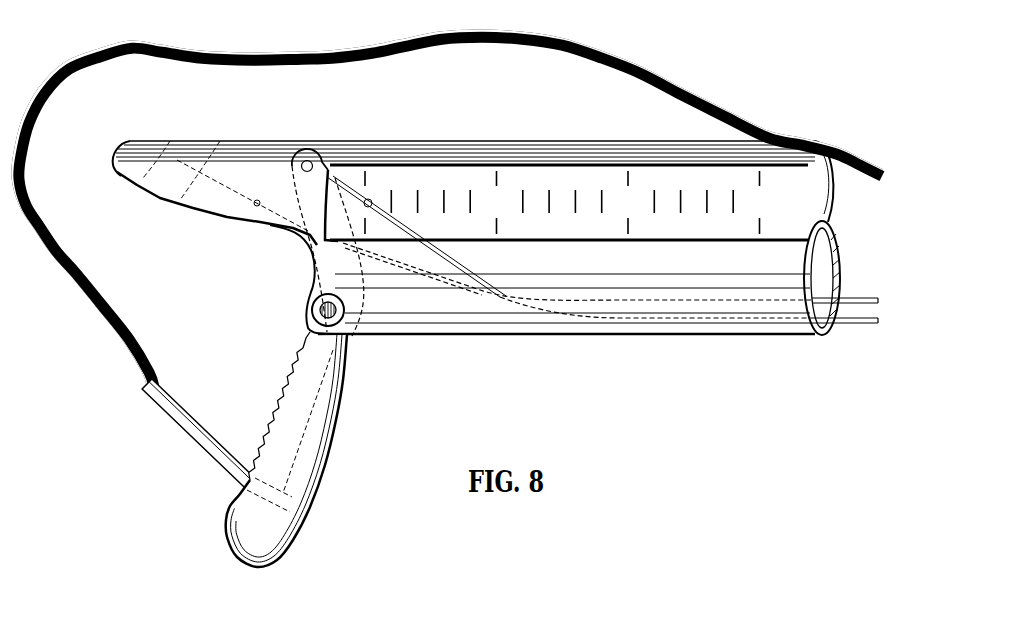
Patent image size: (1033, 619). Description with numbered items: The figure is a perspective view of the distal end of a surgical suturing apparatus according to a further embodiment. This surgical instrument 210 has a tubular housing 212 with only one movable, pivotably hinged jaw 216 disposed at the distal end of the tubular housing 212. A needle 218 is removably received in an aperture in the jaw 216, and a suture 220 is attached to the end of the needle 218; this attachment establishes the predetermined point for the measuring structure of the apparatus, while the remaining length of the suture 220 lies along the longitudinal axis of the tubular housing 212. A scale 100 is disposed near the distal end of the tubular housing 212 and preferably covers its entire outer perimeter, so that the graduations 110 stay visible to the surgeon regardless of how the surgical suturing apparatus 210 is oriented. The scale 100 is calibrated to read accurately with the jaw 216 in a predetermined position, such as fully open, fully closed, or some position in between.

The surgical instrument 210 is at (779, 86).
The scale 100 is at (532, 173).
The graduations 110 is at (574, 205).
The tubular housing 212 is at (388, 163).
The jaw 216 is at (257, 545).
The needle 218 is at (182, 455).
The suture 220 is at (31, 203).